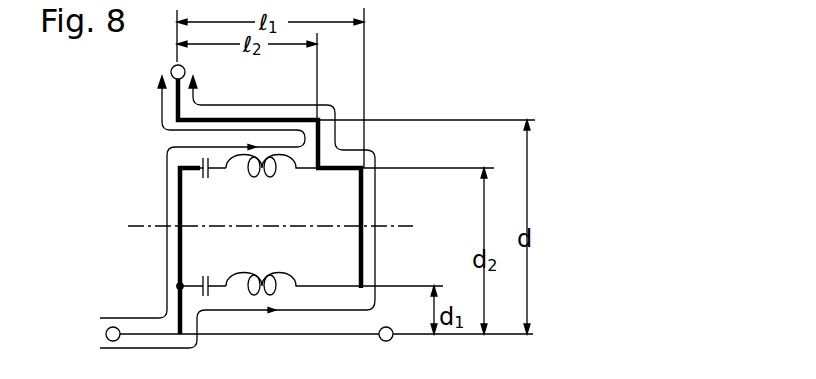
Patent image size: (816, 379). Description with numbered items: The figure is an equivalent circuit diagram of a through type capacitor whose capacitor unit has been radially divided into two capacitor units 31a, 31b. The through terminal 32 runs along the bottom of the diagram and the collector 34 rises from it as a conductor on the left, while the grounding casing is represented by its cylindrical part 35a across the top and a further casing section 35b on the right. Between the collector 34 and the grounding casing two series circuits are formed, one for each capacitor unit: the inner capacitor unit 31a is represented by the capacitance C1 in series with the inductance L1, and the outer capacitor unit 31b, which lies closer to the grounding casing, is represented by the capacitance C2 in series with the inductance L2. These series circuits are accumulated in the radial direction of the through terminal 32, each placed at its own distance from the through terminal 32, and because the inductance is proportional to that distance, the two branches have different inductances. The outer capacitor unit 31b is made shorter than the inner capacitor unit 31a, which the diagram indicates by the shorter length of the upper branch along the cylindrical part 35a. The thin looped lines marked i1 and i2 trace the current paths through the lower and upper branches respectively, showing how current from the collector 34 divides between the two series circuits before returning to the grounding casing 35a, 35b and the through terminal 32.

The through terminal 32 is at (312, 335).
The collector 34 is at (167, 252).
The cylindrical part 35a is at (265, 118).
The strip line section 35b is at (363, 203).
The inner capacitor unit 31a is at (272, 263).
The outer capacitor unit 31b is at (262, 188).
The capacitance C1 is at (202, 275).
The capacitance C2 is at (203, 178).
The inductance L1 is at (288, 276).
The inductance L2 is at (277, 173).
The current i1 is at (377, 249).
The current i2 is at (165, 179).